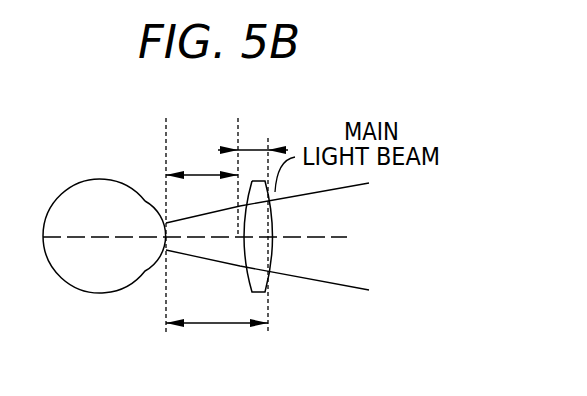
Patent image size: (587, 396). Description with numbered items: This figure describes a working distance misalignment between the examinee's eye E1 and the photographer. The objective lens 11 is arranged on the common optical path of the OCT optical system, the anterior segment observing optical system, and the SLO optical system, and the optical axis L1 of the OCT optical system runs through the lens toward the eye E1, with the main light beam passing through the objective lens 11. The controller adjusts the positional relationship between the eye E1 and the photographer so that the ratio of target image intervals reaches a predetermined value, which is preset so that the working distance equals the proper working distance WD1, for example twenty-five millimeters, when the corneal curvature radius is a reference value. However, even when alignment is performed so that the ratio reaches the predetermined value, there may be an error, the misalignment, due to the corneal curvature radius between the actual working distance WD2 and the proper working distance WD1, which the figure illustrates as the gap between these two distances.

The examinee's eye E1 is at (78, 170).
The optical axis L1 is at (292, 238).
The objective lens 11 is at (277, 252).
The proper working distance WD1 is at (217, 341).
The actual working distance WD2 is at (190, 175).